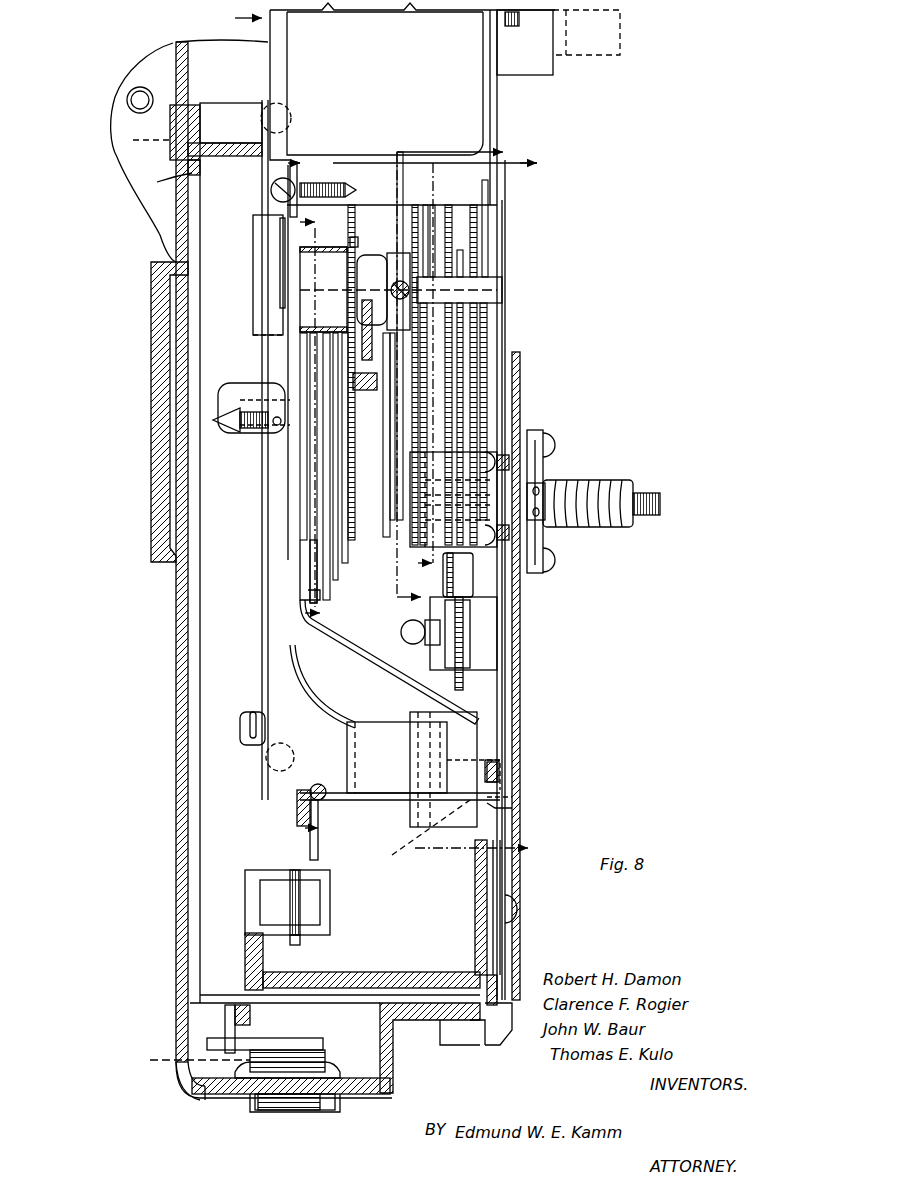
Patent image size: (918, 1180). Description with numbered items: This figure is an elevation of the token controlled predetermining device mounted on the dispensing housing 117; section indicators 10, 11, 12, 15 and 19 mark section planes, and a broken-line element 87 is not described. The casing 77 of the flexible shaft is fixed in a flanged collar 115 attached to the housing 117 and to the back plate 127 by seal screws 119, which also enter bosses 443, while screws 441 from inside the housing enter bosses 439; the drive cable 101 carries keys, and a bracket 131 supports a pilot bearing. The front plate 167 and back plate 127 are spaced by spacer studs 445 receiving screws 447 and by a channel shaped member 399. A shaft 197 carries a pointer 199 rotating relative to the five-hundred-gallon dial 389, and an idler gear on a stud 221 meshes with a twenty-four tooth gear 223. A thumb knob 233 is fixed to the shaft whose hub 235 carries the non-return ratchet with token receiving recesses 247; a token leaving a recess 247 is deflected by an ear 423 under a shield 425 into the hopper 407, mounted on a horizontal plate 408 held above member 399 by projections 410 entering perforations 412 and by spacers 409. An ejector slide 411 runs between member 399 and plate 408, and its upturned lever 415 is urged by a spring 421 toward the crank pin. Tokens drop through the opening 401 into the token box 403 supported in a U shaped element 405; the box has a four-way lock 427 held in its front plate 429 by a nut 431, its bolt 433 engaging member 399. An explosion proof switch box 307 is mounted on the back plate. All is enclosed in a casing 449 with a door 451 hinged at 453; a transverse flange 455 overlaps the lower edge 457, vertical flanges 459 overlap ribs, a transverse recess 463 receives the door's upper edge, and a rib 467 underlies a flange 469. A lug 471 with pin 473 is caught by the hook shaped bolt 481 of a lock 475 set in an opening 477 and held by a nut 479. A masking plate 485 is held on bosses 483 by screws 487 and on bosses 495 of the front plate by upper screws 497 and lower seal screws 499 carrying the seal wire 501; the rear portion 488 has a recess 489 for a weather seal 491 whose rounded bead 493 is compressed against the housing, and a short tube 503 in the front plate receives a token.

The section line 10- 10 is at (384, 433).
The section line 11- 11 is at (483, 360).
The section line 12- 12 is at (462, 374).
The section line 15- 15 is at (412, 495).
The section line 19- 19 is at (322, 417).
The casing of the flexible shaft 77 is at (608, 480).
The mounting block 87 is at (615, 55).
The drive cable 101 is at (655, 493).
The flanged collar 115 is at (545, 520).
The dispenser housing 117 is at (520, 623).
The seal screws 119 is at (550, 445).
The back plate 127 is at (505, 681).
The bracket 131 is at (455, 543).
The front plate 167 is at (308, 597).
The shaft 197 is at (488, 292).
The pointer 199 is at (278, 247).
The stud 221 is at (443, 575).
The twenty-four tooth gear 223 is at (455, 700).
The thumb knob 233 is at (248, 395).
The hub 235 is at (275, 440).
The token receiving recesses 247 is at (300, 580).
The switch box 307 is at (470, 118).
The 500-gallon dial 389 is at (300, 323).
The channel shaped member 399 is at (495, 808).
The opening 401 is at (431, 833).
The token receiving box 403 is at (487, 950).
The U shaped element 405 is at (355, 990).
The token receiving hopper 407 is at (398, 765).
The horizontal plate 408 is at (440, 798).
The spacers 409 is at (328, 800).
The projections 410 is at (502, 790).
The ejector slide 411 is at (370, 795).
The perforations 412 is at (505, 800).
The lever 415 is at (425, 770).
The spring 421 is at (430, 612).
The ear 423 is at (292, 673).
The shield 425 is at (413, 620).
The four-way lock 427 is at (300, 920).
The front plate of the box 429 is at (265, 958).
The nut 431 is at (278, 935).
The bolt 433 is at (320, 848).
The bosses 439 is at (505, 890).
The screws 441 is at (515, 909).
The bosses 443 is at (527, 430).
The spacer studs 445 is at (483, 190).
The screws 447 is at (290, 165).
The casing 449 is at (370, 1093).
The door 451 is at (160, 681).
The hinge 453 is at (133, 104).
The transverse flange 455 is at (202, 1105).
The lower edge of the casing 457 is at (215, 1100).
The vertical flanges 459 is at (185, 1058).
The transverse recess 463 is at (208, 122).
The inwardly projecting rib 467 is at (157, 182).
The inwardly projecting flange 469 is at (248, 152).
The lug 471 is at (250, 1010).
The pin 473 is at (236, 1030).
The lock 475 is at (285, 1110).
The opening 477 is at (265, 1112).
The nut 479 is at (335, 1068).
The hook shaped bolt 481 is at (308, 1040).
The bosses 483 is at (235, 78).
The masking plate 485 is at (262, 635).
The screws 487 is at (272, 90).
The rear portion of the case 488 is at (470, 1022).
The recess 489 is at (487, 993).
The weather seal 491 is at (468, 1025).
The rounded bead 493 is at (500, 1040).
The bosses 495 is at (300, 200).
The upper screws 497 is at (271, 189).
The lower screws 499 is at (240, 735).
The seal wire 501 is at (252, 710).
The short tube 503 is at (268, 293).